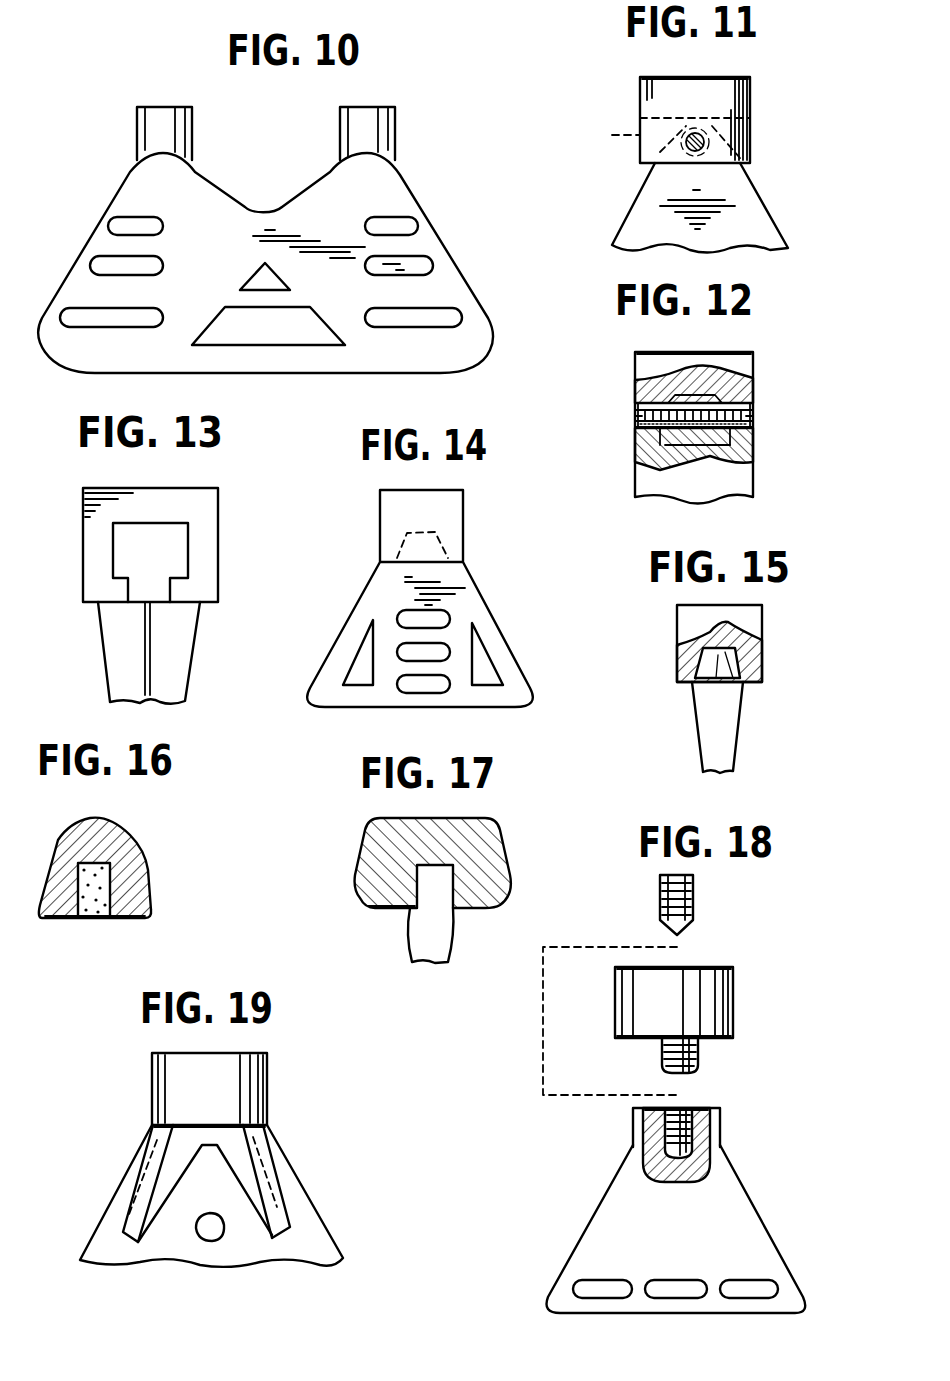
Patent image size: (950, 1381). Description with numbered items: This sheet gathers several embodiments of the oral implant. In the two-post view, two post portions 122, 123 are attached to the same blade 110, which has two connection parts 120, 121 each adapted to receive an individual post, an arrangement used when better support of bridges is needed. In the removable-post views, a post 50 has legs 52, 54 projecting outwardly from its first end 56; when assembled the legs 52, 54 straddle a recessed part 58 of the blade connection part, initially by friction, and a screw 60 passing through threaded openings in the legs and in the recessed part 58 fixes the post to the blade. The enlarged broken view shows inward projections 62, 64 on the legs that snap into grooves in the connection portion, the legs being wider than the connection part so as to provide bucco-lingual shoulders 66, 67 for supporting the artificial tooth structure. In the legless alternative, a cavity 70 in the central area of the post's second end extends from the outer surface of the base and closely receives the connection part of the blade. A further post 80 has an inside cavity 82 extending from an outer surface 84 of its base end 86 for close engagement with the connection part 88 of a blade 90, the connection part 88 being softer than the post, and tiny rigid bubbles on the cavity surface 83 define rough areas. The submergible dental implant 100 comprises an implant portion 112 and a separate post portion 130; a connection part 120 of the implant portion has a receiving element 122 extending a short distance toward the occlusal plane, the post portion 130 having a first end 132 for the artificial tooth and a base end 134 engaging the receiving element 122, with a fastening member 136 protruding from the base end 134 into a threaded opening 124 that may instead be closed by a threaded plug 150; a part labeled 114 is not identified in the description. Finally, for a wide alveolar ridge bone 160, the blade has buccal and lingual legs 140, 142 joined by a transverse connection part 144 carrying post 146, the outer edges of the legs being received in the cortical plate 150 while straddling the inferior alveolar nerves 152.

In FIG. 10, the blade 110 is at (270, 227).
In FIG. 10, the connection part 120 is at (137, 183).
In FIG. 18, the connection part 120 is at (730, 1205).
In FIG. 10, the connection part 121 is at (383, 183).
In FIG. 10, the post portion 122 is at (152, 125).
In FIG. 18, the post portion 122 is at (707, 1147).
In FIG. 10, the post portion 123 is at (377, 125).
In FIG. 11, the post 50 is at (638, 88).
In FIG. 12, the post 50 is at (757, 365).
In FIG. 13, the post 50 is at (82, 500).
In FIG. 11, the leg 52 is at (640, 153).
In FIG. 12, the leg 52 is at (647, 435).
In FIG. 13, the leg 52 is at (97, 543).
In FIG. 11, the leg 54 is at (750, 157).
In FIG. 12, the leg 54 is at (743, 435).
In FIG. 13, the leg 54 is at (210, 542).
In FIG. 11, the first end 56 is at (718, 77).
In FIG. 12, the first end 56 is at (663, 352).
In FIG. 13, the first end 56 is at (110, 488).
In FIG. 11, the recessed part 58 is at (604, 134).
In FIG. 12, the recessed part 58 is at (673, 398).
In FIG. 13, the recessed part 58 is at (163, 540).
In FIG. 11, the screw 60 is at (703, 142).
In FIG. 12, the screw 60 is at (742, 410).
In FIG. 13, the inward projection 62 is at (180, 588).
In FIG. 13, the inward projection 64 is at (123, 593).
In FIG. 13, the bucco-lingual shoulder 66 is at (90, 603).
In FIG. 13, the bucco-lingual shoulder 67 is at (210, 603).
In FIG. 14, the cavity 70 is at (397, 537).
In FIG. 15, the cavity 70 is at (760, 650).
In FIG. 16, the post 80 is at (145, 840).
In FIG. 16, the inside cavity 82 is at (110, 887).
In FIG. 16, the surface of the cavity 83 is at (90, 863).
In FIG. 16, the outer surface 84 is at (63, 913).
In FIG. 17, the outer surface 84 is at (378, 912).
In FIG. 17, the base end 86 is at (490, 862).
In FIG. 17, the connection part 88 is at (430, 887).
In FIG. 17, the blade 90 is at (438, 947).
In FIG. 18, the submergible dental implant 100 is at (608, 1188).
In FIG. 18, the implant portion 112 is at (622, 1235).
In FIG. 18, the tab 114 is at (635, 1127).
In FIG. 18, the opening 124 is at (697, 1127).
In FIG. 18, the post portion 130 is at (735, 997).
In FIG. 18, the first end 132 is at (713, 967).
In FIG. 18, the base end 134 is at (638, 1040).
In FIG. 18, the fastening member 136 is at (698, 1057).
In FIG. 18, the plug 150 is at (693, 900).
In FIG. 19, the plug 150 is at (118, 1208).
In FIG. 19, the buccal leg 140 is at (130, 1243).
In FIG. 19, the lingual leg 142 is at (288, 1243).
In FIG. 19, the transverse connection part 144 is at (202, 1133).
In FIG. 19, the post 146 is at (263, 1077).
In FIG. 19, the inferior alveolar nerve 152 is at (202, 1240).
In FIG. 19, the alveolar ridge bone 160 is at (290, 1162).